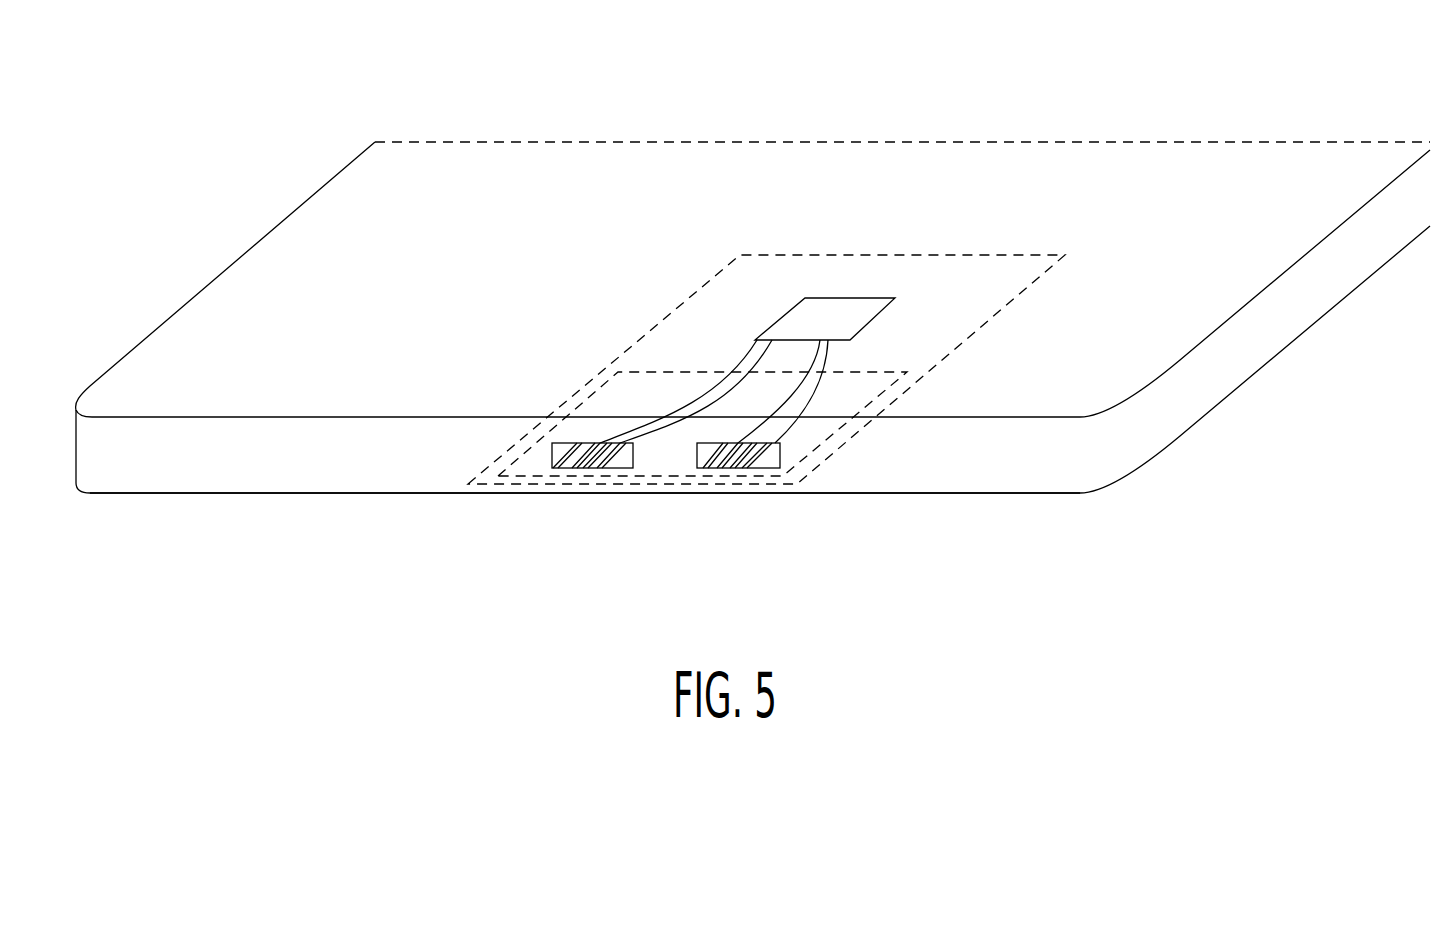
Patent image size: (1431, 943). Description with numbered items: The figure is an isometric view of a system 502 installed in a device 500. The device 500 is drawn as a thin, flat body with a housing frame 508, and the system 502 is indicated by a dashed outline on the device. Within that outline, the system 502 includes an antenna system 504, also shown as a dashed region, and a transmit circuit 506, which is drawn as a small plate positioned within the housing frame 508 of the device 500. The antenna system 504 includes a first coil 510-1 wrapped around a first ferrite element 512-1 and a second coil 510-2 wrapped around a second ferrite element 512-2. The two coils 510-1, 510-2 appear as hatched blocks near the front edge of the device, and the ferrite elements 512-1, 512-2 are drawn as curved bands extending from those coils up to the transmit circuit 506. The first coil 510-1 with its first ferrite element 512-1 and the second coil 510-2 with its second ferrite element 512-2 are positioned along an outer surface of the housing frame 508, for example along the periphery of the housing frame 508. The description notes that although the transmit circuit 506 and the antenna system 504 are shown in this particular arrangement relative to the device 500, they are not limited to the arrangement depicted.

The device 500 is at (442, 168).
The system 502 is at (900, 253).
The antenna system 504 is at (668, 372).
The transmit circuit 506 is at (825, 322).
The housing frame 508 is at (978, 470).
The first coil 510-1 is at (622, 470).
The second coil 510-2 is at (752, 470).
The first ferrite element 512-1 is at (557, 452).
The second ferrite element 512-2 is at (768, 463).